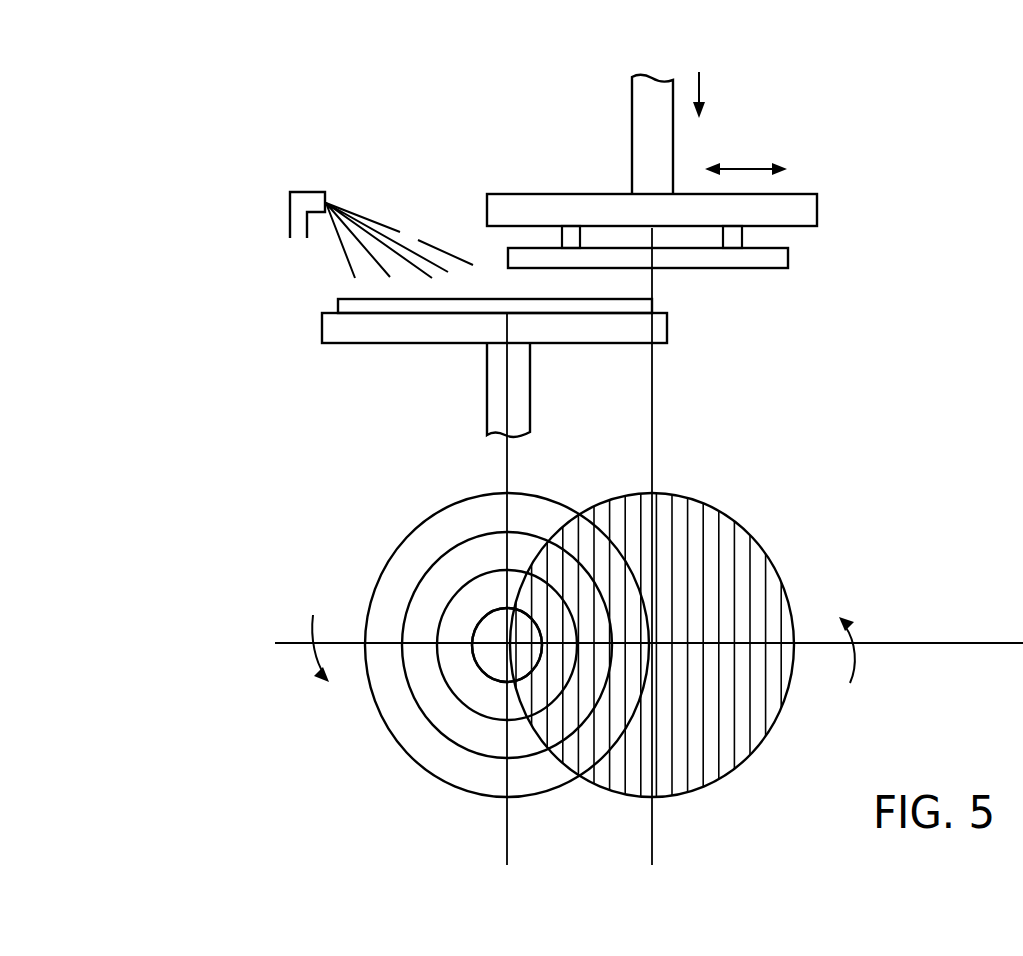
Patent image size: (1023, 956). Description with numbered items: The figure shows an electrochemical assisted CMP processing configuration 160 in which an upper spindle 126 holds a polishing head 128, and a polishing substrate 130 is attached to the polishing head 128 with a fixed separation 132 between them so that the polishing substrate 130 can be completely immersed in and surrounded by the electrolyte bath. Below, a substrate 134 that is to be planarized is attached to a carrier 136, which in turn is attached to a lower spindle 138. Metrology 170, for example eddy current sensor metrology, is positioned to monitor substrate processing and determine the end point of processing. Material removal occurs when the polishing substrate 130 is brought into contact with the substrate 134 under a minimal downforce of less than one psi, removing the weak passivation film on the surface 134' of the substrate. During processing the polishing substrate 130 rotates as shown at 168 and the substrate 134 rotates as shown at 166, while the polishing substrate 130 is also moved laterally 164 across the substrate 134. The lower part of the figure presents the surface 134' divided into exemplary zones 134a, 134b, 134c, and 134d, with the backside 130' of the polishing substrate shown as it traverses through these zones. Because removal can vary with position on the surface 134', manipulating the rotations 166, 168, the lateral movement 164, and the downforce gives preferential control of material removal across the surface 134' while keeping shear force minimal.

The electrochemical assisted CMP processing configuration 160 is at (150, 92).
The upper spindle 126 is at (638, 104).
The lateral movement 164 is at (702, 88).
The polishing head 128 is at (817, 207).
The fixed separation 132 is at (798, 239).
The polishing substrate 130 is at (694, 272).
The metrology 170 is at (305, 192).
The substrate 134 is at (448, 294).
The carrier 136 is at (322, 328).
The lower spindle 138 is at (490, 400).
The surface of the substrate to be planarized 134' is at (489, 645).
The zone 134d is at (507, 645).
The zone 134c is at (506, 633).
The zone 134b is at (498, 628).
The zone 134a is at (507, 645).
The backside of polishing substrate 130' is at (680, 645).
The rotation of the substrate 166 is at (313, 615).
The rotation of the polishing substrate 168 is at (857, 635).